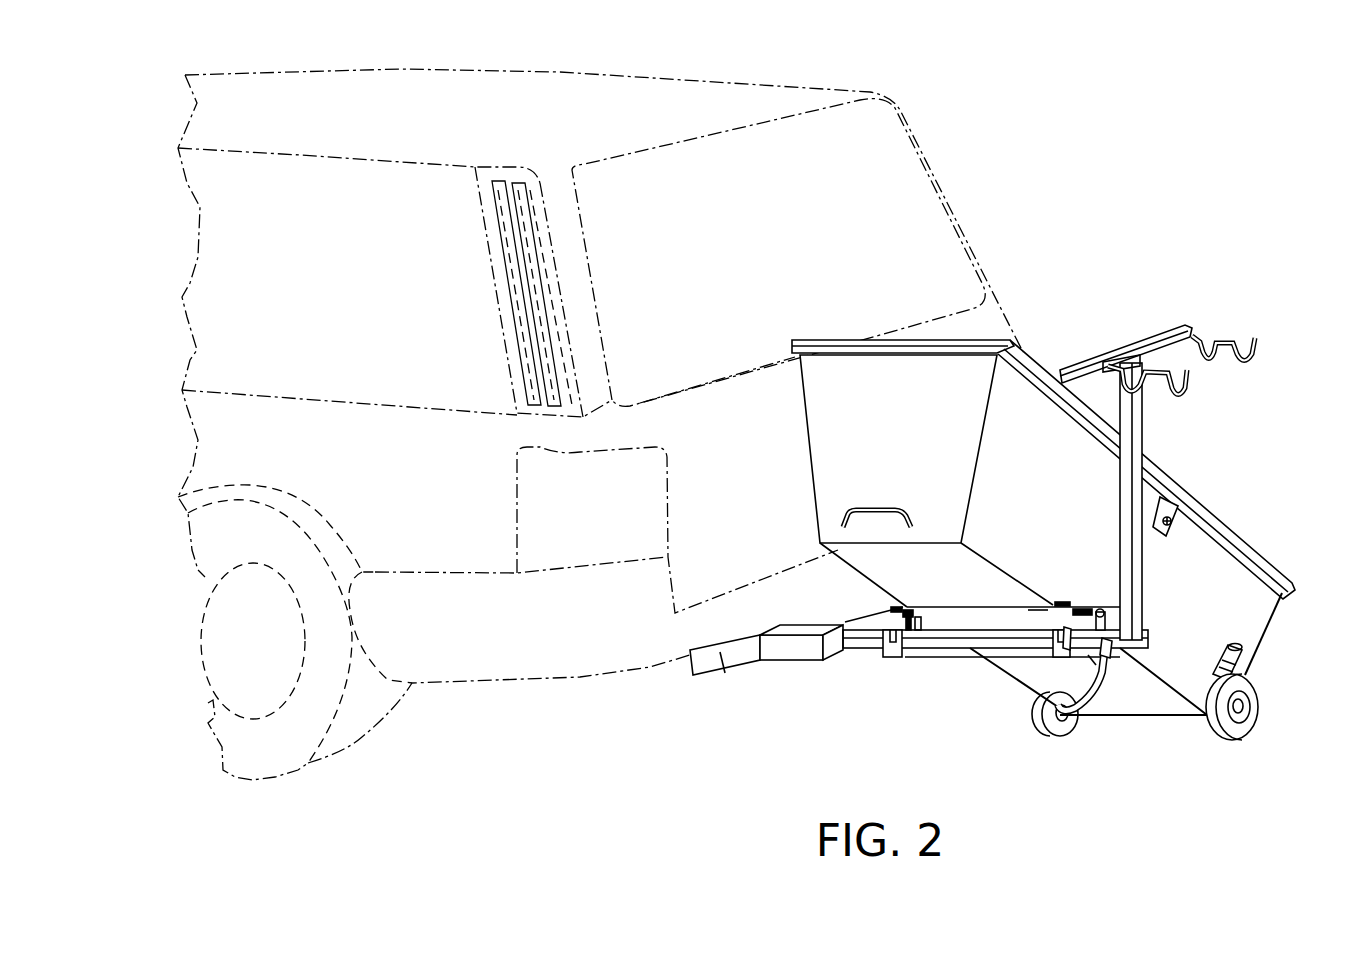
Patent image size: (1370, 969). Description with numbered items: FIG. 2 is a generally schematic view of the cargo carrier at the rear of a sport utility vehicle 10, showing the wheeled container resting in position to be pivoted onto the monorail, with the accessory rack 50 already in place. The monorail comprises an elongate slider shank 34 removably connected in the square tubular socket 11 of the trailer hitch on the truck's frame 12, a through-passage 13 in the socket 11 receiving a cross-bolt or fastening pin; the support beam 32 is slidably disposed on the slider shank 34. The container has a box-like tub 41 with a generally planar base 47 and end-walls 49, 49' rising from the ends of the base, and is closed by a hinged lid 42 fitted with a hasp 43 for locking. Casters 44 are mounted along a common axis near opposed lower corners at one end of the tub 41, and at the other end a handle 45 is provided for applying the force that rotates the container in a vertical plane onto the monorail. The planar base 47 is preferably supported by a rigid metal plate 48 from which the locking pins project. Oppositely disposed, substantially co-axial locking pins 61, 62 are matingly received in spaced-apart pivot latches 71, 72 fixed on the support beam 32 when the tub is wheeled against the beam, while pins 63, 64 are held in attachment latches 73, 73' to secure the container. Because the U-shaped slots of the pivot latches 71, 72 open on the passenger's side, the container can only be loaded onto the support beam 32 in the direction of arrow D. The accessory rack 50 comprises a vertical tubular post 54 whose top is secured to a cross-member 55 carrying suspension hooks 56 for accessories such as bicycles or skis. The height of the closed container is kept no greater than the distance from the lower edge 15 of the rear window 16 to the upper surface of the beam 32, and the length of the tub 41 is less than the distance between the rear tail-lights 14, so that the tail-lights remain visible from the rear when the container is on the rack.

The sport utility vehicle 10 is at (982, 190).
The square tubular socket 11 is at (722, 687).
The truck's frame 12 is at (690, 660).
The through-passage 13 is at (806, 647).
The rear tail-light 14 is at (517, 497).
The lower edge of the rear window 15 is at (727, 380).
The rear window 16 is at (754, 223).
The support beam 32 is at (1105, 668).
The slider shank 34 is at (873, 632).
The tub 41 is at (1262, 640).
The lid 42 is at (1257, 545).
The hasp 43 is at (1175, 525).
The casters 44 is at (1075, 740).
The handle 45 is at (870, 505).
The planar base 47 is at (1023, 673).
The rigid metal plate 48 is at (1031, 612).
The end-wall 49 is at (956, 481).
The end-wall 49' is at (1274, 662).
The accessory rack 50 is at (1119, 497).
The vertical tubular post 54 is at (1145, 570).
The cross-member 55 is at (1162, 338).
The suspension hooks 56 is at (1185, 390).
The locking pin 61 is at (1080, 622).
The locking pin 62 is at (908, 608).
The locking pin 63 is at (892, 608).
The locking pin 64 is at (1053, 603).
The pivot latch 71 is at (1100, 608).
The pivot latch 72 is at (918, 634).
The attachment latch 73 is at (892, 680).
The attachment latch 73' is at (1123, 707).
The arrow D is at (1150, 275).